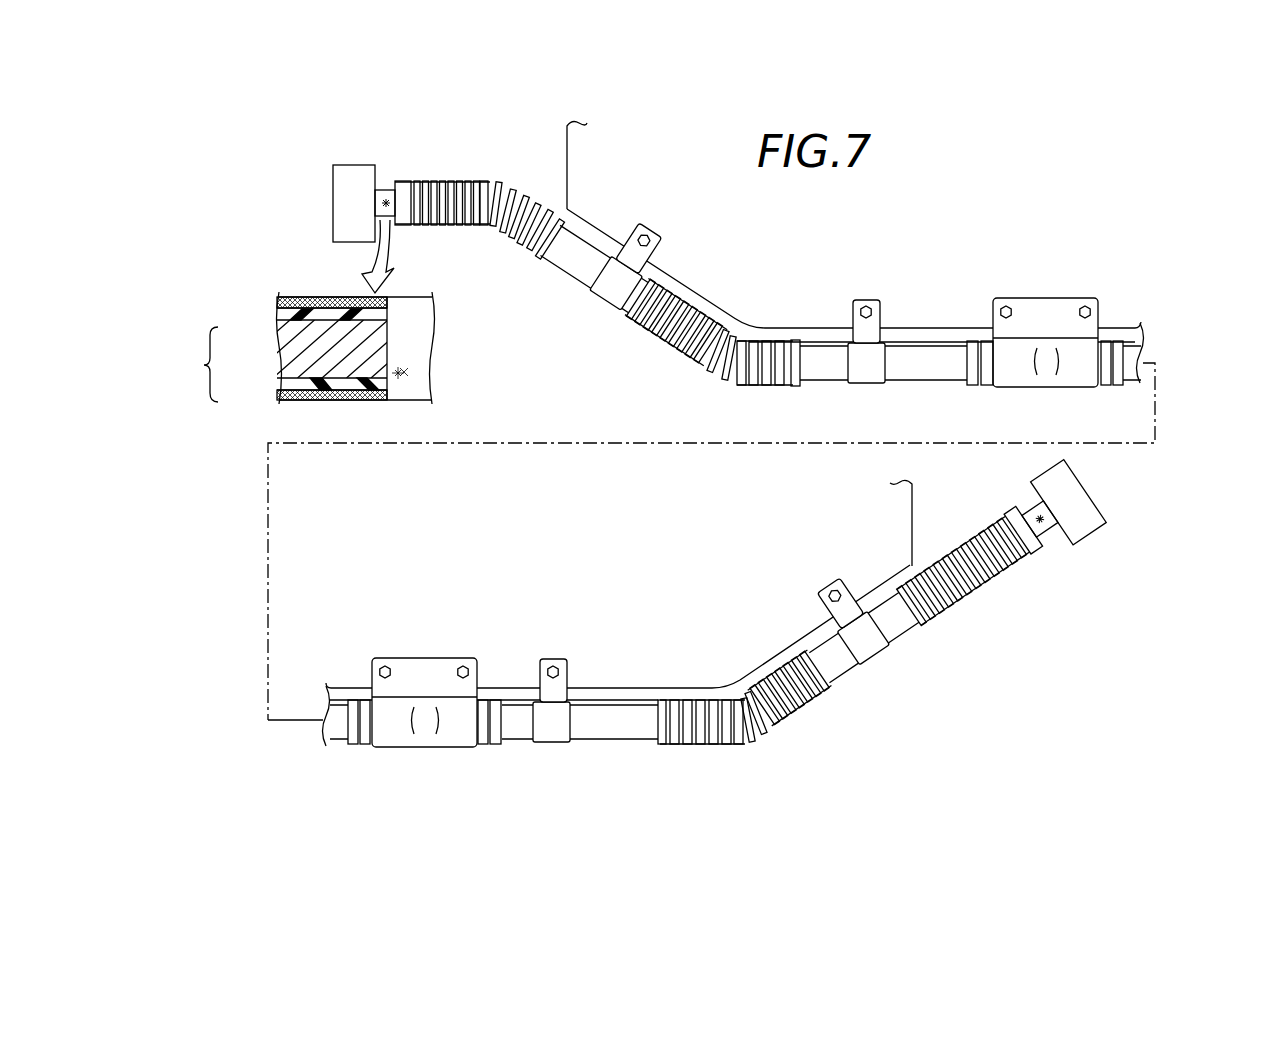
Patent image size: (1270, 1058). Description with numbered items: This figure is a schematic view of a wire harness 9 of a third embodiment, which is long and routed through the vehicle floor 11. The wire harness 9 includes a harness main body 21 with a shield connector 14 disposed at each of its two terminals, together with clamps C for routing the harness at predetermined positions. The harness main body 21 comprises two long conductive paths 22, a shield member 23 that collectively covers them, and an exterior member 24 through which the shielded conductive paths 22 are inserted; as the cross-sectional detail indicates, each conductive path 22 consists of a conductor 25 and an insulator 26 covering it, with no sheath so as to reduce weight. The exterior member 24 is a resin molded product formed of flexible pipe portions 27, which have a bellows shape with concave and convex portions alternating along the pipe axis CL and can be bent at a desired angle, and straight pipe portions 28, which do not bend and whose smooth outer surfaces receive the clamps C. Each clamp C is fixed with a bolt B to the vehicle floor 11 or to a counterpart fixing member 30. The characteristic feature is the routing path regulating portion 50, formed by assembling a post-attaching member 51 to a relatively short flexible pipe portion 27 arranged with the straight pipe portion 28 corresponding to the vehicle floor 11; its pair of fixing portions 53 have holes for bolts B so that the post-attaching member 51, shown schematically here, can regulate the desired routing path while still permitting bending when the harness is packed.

The wire harness 9 is at (701, 473).
The vehicle floor 11 is at (1137, 327).
The shield connector 14 is at (355, 178).
The harness main body 21 is at (673, 355).
The conductive path 22 is at (1067, 568).
The shield member 23 is at (384, 188).
The exterior member 24 is at (939, 336).
The conductor 25 is at (288, 342).
The insulator 26 is at (288, 385).
The flexible pipe portion 27 is at (470, 182).
The straight pipe portion 28 is at (642, 296).
The counterpart fixing member 30 is at (566, 178).
The routing path regulating portion 50 is at (1038, 392).
The post-attaching member 51 is at (1077, 373).
The fixing portion 53 is at (1047, 310).
The bolt B is at (644, 240).
The clamp C is at (609, 297).
The pipe axis CL is at (1158, 390).